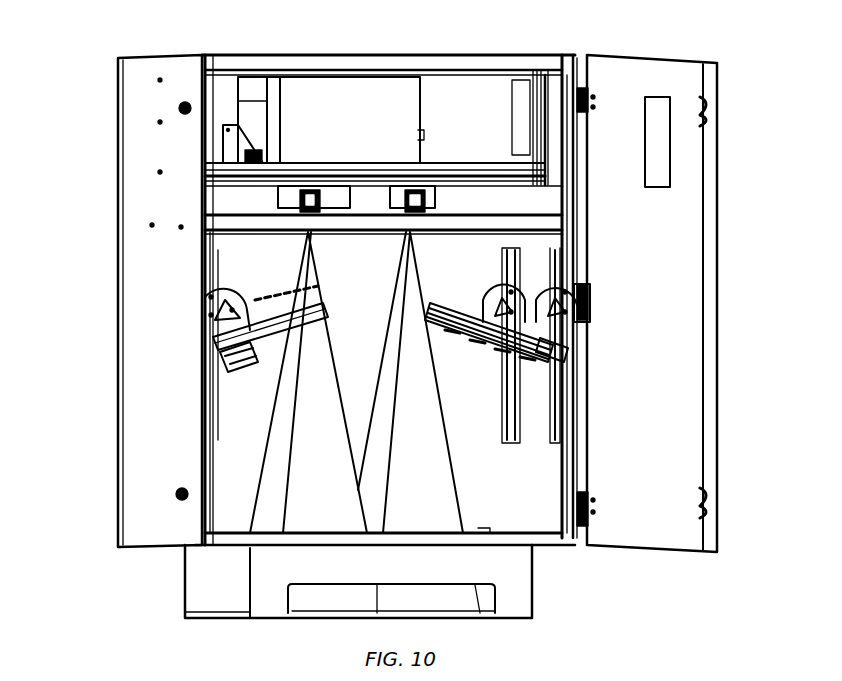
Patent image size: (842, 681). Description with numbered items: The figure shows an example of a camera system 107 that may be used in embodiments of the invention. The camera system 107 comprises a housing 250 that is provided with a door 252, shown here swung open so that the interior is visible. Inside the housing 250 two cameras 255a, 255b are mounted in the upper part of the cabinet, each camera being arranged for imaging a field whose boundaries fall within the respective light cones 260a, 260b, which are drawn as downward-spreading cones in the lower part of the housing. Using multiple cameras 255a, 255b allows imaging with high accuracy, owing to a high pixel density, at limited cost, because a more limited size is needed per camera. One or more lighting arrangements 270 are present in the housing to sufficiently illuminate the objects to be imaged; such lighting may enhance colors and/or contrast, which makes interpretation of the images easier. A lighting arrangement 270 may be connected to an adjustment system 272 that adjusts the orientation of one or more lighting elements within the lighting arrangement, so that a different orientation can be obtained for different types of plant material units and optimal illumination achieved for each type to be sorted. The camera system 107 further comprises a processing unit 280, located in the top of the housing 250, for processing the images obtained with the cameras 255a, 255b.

The camera system 107 is at (492, 40).
The housing 250 is at (158, 142).
The door 252 is at (708, 82).
The camera 255a is at (300, 205).
The camera 255b is at (415, 198).
The light cone 260a is at (305, 458).
The light cone 260b is at (410, 462).
The lighting arrangement 270 is at (240, 335).
The adjustment system 272 is at (592, 312).
The processing unit 280 is at (320, 90).